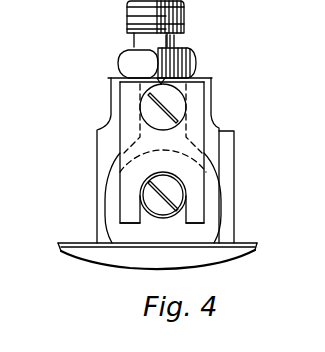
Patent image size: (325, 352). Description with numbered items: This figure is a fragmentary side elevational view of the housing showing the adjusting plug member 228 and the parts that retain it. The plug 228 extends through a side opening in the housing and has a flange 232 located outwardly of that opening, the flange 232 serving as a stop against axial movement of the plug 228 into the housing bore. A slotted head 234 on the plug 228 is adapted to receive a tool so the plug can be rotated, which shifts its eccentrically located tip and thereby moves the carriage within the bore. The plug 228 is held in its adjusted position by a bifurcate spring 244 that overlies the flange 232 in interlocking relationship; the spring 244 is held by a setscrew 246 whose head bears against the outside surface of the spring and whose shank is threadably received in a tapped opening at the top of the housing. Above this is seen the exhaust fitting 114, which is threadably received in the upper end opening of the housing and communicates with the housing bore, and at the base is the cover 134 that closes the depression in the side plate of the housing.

The exhaust fitting 114 is at (135, 15).
The setscrew 246 is at (178, 103).
The bifurcate spring 244 is at (200, 197).
The slotted head 234 is at (150, 195).
The flange 232 is at (150, 227).
The adjusting plug member 228 is at (188, 225).
The cover 134 is at (77, 259).